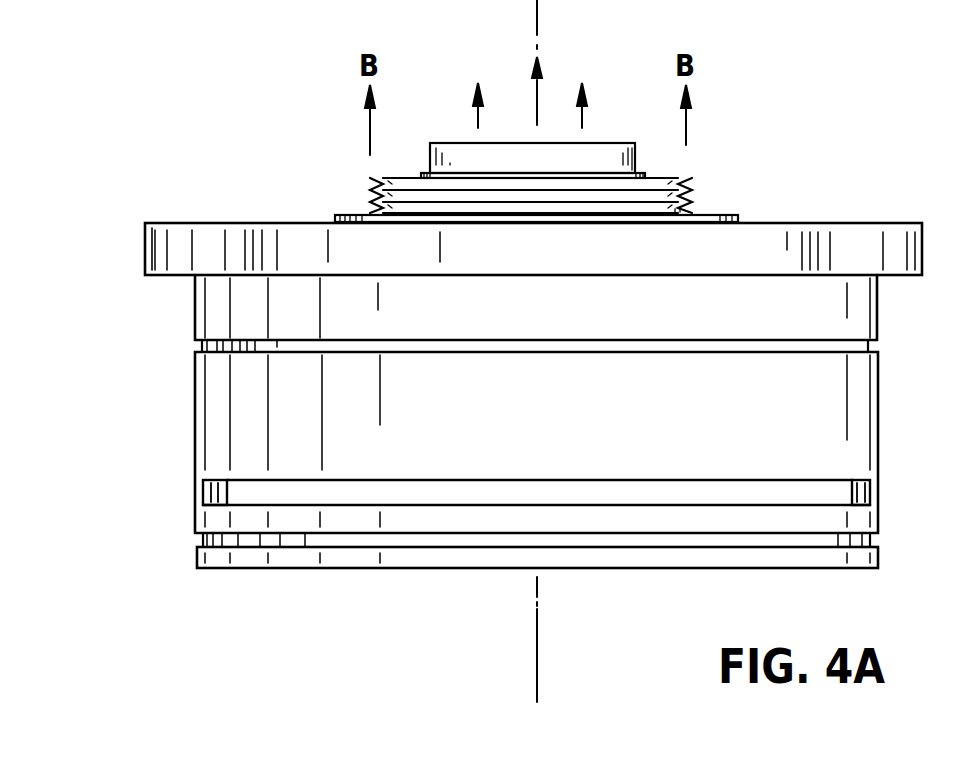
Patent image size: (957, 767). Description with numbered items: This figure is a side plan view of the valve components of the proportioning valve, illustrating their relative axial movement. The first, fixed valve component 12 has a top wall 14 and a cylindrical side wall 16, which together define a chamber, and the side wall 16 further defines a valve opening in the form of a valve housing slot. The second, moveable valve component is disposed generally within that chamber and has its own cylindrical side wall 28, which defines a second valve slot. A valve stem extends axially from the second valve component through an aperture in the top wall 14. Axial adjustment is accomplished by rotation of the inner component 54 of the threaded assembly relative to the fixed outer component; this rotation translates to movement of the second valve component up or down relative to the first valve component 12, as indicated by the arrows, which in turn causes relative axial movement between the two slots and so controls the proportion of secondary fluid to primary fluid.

The first valve component 12 is at (167, 338).
The top wall 14 is at (207, 243).
The cylindrical side wall 16 is at (220, 417).
The cylindrical side wall 28 is at (220, 487).
The inner component 54 is at (686, 184).